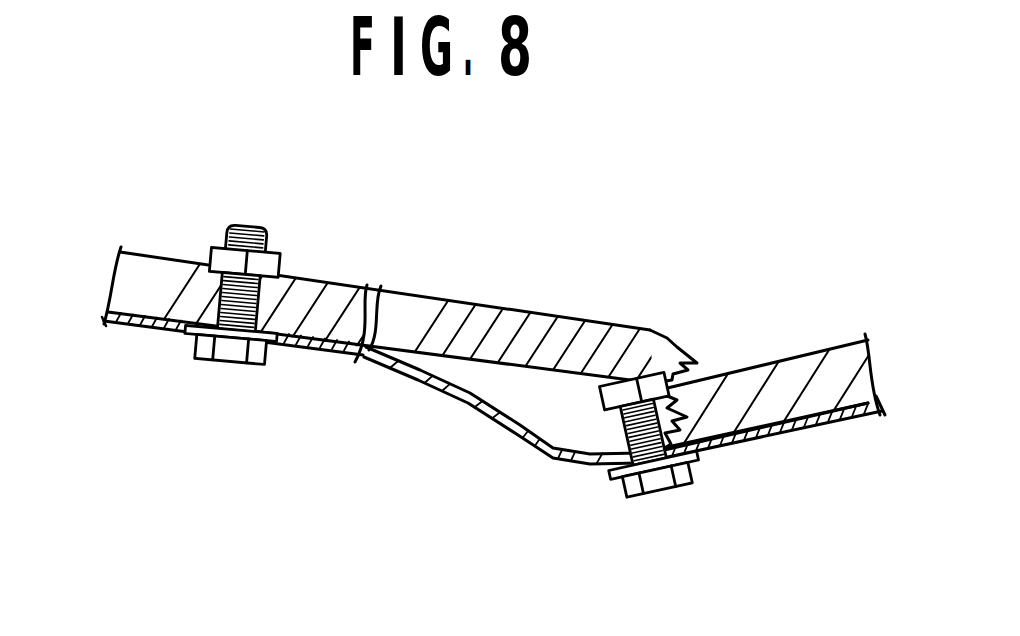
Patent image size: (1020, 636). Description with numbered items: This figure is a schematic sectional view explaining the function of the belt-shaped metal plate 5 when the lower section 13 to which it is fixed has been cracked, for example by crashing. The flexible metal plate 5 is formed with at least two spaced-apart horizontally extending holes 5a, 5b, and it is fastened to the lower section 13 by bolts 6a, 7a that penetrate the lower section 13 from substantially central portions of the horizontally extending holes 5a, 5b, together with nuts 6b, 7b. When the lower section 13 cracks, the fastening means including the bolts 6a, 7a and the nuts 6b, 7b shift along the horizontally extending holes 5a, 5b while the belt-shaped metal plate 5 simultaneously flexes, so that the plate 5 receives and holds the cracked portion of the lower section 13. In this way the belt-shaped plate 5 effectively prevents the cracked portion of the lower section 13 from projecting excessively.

The lower section 13 is at (476, 300).
The belt-shaped metal plate 5 is at (452, 396).
The horizontally extending hole 5a is at (306, 357).
The horizontally extending hole 5b is at (580, 461).
The bolt 7a is at (282, 268).
The nut 7b is at (614, 386).
The bolt 6a is at (220, 363).
The nut 6b is at (663, 490).